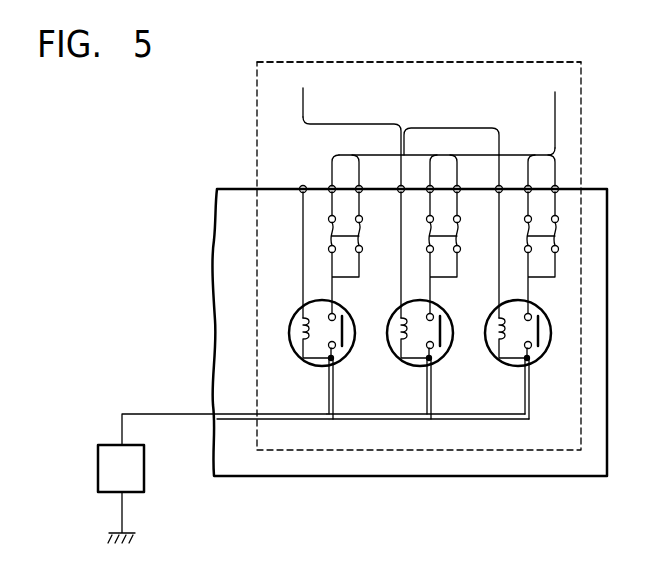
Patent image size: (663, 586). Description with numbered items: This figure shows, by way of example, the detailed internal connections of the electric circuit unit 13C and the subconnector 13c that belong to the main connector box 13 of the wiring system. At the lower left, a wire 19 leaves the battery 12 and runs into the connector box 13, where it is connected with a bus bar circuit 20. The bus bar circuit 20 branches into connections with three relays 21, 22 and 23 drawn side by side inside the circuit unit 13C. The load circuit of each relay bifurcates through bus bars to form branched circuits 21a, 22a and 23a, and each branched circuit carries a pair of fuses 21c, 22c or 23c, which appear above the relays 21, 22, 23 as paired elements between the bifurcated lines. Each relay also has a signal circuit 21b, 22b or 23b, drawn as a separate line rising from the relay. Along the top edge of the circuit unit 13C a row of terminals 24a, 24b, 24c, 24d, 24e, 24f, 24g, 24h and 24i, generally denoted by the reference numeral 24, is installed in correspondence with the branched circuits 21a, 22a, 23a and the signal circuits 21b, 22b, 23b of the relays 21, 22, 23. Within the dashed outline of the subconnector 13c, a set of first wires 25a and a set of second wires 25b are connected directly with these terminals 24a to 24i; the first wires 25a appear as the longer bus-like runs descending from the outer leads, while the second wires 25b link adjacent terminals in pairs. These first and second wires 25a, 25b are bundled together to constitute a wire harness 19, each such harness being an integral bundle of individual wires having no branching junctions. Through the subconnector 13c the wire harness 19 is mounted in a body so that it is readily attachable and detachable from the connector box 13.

The battery 12 is at (121, 494).
The main connector box 13 is at (409, 333).
The subconnector 13c is at (419, 73).
The electric circuit unit 13C is at (419, 256).
The wire harness 19 is at (303, 118).
The bus bar circuit 20 is at (273, 414).
The relay 21 is at (311, 359).
The branched circuit 21a is at (340, 278).
The signal circuit 21b is at (303, 262).
The fuses 21c is at (360, 236).
The relay 22 is at (410, 359).
The branched circuit 22a is at (438, 278).
The signal circuit 22b is at (401, 254).
The fuses 22c is at (458, 236).
The relay 23 is at (508, 359).
The branched circuit 23a is at (536, 278).
The signal circuit 23b is at (499, 252).
The fuses 23c is at (556, 236).
The terminals 24 is at (557, 193).
The terminal 24a is at (289, 199).
The terminal 24b is at (321, 199).
The terminal 24c is at (349, 199).
The terminal 24d is at (389, 199).
The terminal 24e is at (419, 199).
The terminal 24f is at (447, 199).
The terminal 24g is at (486, 199).
The terminal 24h is at (517, 199).
The terminal 24i is at (545, 199).
The first wires 25a is at (304, 154).
The second wires 25b is at (333, 181).